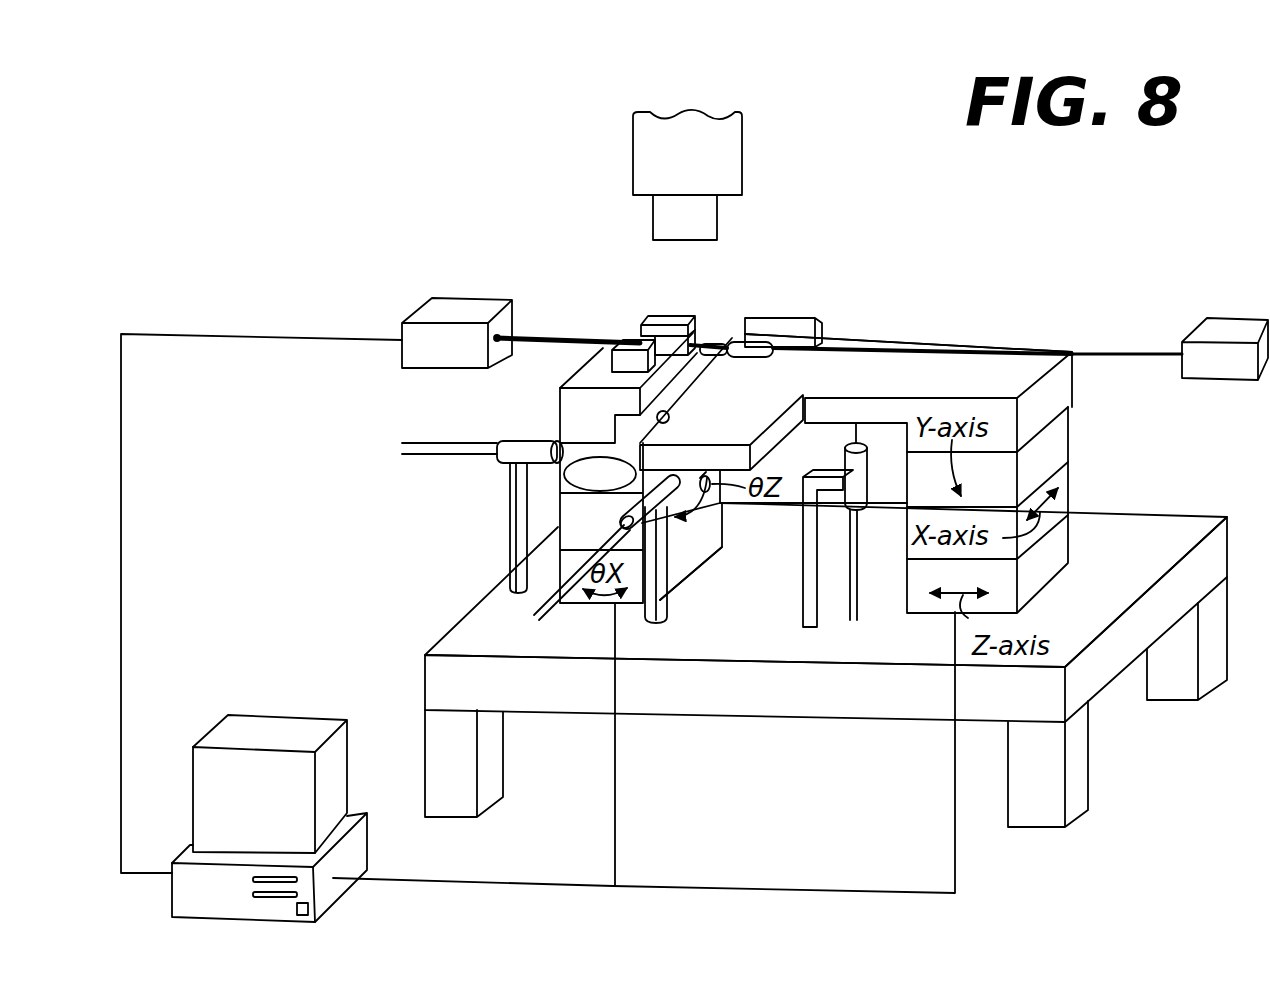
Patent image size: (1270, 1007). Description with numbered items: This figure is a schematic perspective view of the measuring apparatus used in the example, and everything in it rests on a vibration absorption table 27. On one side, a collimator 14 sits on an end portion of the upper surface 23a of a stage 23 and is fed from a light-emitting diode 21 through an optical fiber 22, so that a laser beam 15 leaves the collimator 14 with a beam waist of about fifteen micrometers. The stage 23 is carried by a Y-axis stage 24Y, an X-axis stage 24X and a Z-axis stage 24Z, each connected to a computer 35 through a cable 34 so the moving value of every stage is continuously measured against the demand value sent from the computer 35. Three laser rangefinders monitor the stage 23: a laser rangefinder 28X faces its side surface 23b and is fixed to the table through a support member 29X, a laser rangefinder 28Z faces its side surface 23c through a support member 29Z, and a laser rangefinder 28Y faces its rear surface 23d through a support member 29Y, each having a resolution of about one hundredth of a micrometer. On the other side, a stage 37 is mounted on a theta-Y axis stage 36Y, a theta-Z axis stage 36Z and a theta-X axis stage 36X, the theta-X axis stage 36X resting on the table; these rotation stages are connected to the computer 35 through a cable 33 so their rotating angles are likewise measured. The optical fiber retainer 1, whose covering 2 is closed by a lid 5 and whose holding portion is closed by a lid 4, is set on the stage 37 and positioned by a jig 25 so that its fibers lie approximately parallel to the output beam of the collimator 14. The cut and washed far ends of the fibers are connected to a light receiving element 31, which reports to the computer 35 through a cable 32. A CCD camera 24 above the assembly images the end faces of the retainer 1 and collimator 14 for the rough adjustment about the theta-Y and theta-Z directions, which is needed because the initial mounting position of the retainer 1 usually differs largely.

The optical fiber retainer 1 is at (634, 318).
The covering 2 is at (543, 335).
The lid 4 is at (673, 335).
The lid 5 is at (657, 315).
The collimator 14 is at (730, 340).
The laser beam 15 is at (707, 340).
The light-emitting diode 21 is at (1232, 328).
The optical fiber 22 is at (1123, 357).
The stage 23 is at (970, 362).
The upper surface 23a is at (878, 362).
The side surface 23b is at (723, 455).
The side surface 23c is at (670, 414).
The rear surface 23d is at (827, 423).
The CCD camera 24 is at (728, 167).
The X-axis stage 24X is at (1063, 472).
The Y-axis stage 24Y is at (1063, 433).
The Z-axis stage 24Z is at (1057, 545).
The jig 25 is at (620, 343).
The vibration absorption table 27 is at (1190, 521).
The laser rangefinder 28X is at (647, 512).
The laser rangefinder 28Y is at (859, 505).
The laser rangefinder 28Z is at (517, 442).
The support member 29X is at (653, 623).
The support member 29Y is at (803, 627).
The support member 29Z is at (513, 523).
The light receiving element 31 is at (468, 307).
The cable 32 is at (333, 335).
The cable 33 is at (615, 790).
The cable 34 is at (955, 843).
The computer 35 is at (285, 727).
The θX axis stage 36X is at (705, 548).
The θY axis stage 36Y is at (565, 488).
The θZ axis stage 36Z is at (716, 492).
The stage 37 is at (575, 397).